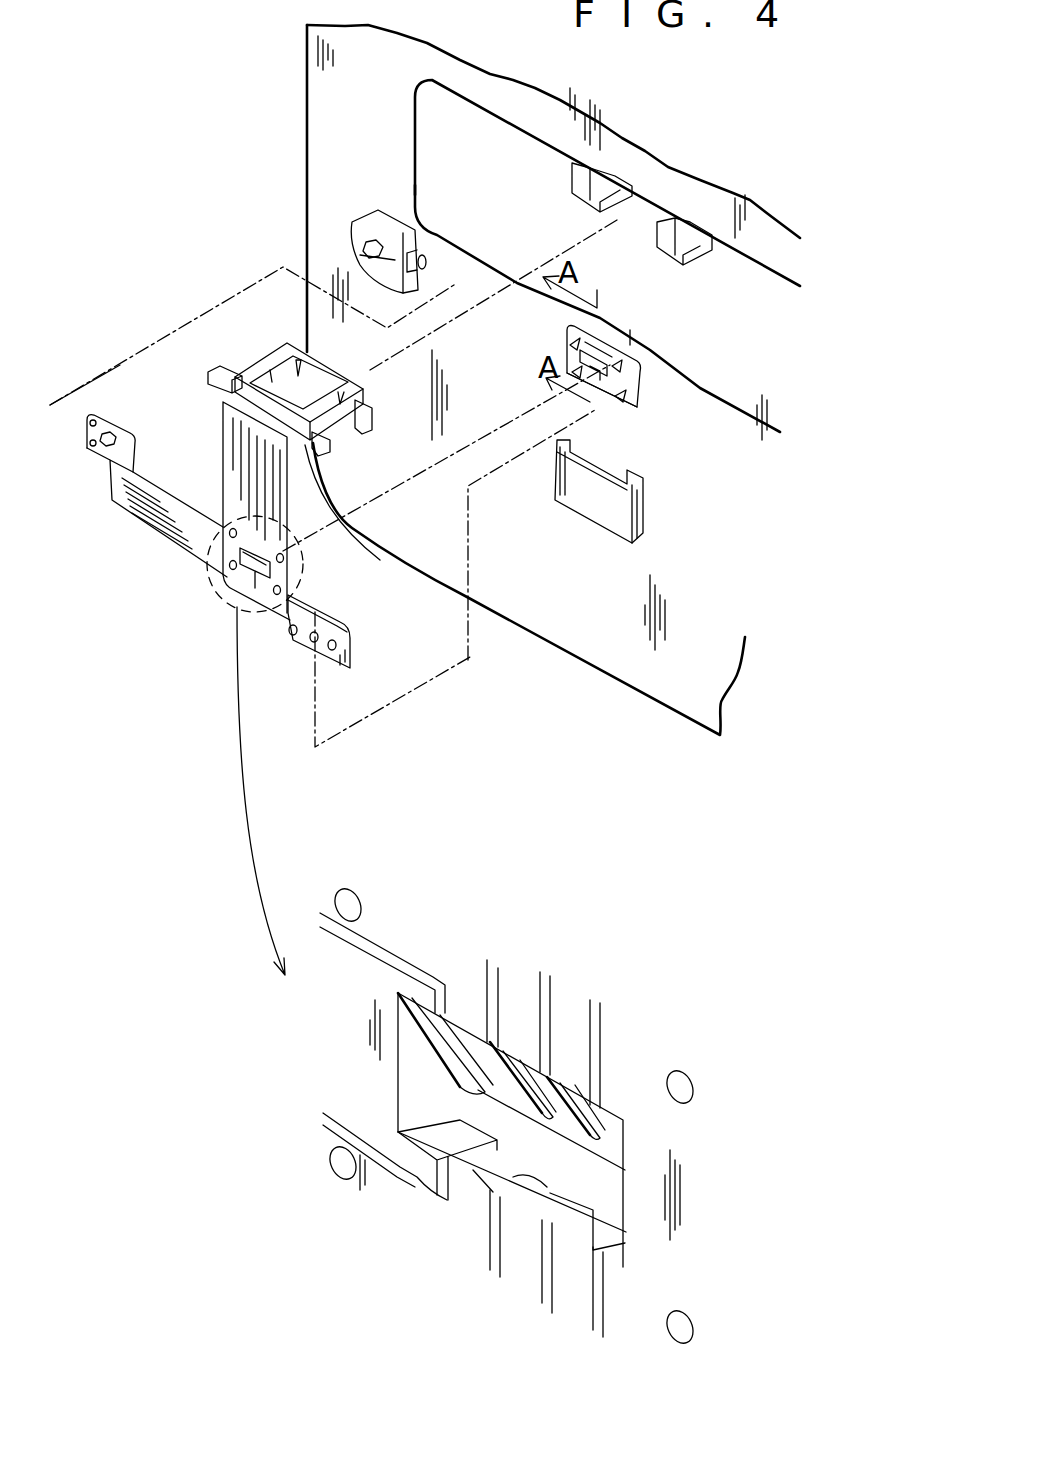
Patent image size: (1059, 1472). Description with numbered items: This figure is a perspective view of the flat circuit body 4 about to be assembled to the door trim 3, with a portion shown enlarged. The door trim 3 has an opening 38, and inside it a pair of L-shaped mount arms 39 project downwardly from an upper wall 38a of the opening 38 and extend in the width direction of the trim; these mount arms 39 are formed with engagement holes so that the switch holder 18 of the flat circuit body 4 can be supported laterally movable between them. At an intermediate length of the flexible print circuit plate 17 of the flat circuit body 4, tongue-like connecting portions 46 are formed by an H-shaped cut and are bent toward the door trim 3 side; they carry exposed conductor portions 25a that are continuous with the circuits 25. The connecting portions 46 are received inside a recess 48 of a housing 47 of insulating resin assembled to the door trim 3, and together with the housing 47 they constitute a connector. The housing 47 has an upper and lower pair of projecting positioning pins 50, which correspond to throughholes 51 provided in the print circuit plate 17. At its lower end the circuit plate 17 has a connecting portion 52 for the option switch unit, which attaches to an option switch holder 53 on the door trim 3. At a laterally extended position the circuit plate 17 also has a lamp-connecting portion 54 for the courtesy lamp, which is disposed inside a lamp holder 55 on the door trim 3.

The door trim 3 is at (304, 127).
The flat circuit body 4 is at (180, 402).
The flexible print circuit plate 17 is at (290, 477).
The switch holder 18 is at (272, 350).
The circuits 25 is at (243, 452).
The exposed conductor portions 25a is at (470, 1063).
The opening 38 is at (453, 124).
The upper wall 38a is at (528, 158).
The mount arms 39 is at (667, 254).
The connecting portions 46 is at (433, 1052).
The housing 47 is at (567, 353).
The recess 48 is at (596, 350).
The positioning pins 50 is at (633, 408).
The throughholes 51 is at (678, 1080).
The connecting portion 52 is at (300, 648).
The option switch holder 53 is at (583, 507).
The lamp-connecting portion 54 is at (90, 447).
The lamp holder 55 is at (352, 253).